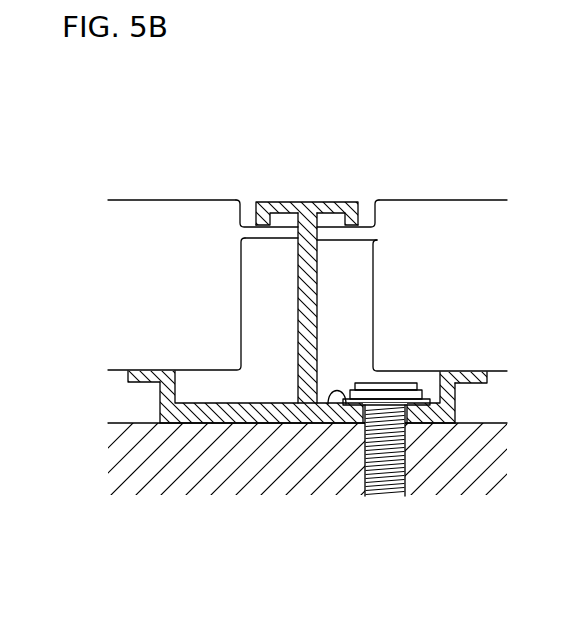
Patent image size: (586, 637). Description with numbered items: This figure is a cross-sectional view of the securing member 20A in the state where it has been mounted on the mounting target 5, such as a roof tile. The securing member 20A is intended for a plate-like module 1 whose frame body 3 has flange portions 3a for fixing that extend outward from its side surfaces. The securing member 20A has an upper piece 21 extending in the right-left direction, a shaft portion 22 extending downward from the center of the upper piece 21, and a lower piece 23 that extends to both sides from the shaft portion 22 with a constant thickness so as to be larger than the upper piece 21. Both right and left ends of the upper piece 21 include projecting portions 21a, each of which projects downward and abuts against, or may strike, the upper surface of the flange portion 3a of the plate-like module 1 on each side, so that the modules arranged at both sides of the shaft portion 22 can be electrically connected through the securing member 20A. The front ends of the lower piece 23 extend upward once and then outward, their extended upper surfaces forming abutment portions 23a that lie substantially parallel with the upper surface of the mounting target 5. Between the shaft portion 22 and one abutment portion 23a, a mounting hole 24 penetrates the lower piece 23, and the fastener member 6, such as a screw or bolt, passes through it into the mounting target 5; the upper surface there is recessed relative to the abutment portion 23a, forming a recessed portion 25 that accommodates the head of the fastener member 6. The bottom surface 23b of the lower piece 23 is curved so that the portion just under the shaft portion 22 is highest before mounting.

The plate-like module 1 is at (310, 153).
The frame body 3 is at (298, 254).
The flange portion 3a is at (277, 239).
The securing member 20A is at (352, 194).
The upper piece 21 is at (313, 255).
The projecting portion 21a is at (240, 228).
The shaft portion 22 is at (303, 302).
The lower piece 23 is at (298, 430).
The abutment portion 23a is at (142, 370).
The bottom surface 23b is at (272, 423).
The mounting hole 24 is at (398, 416).
The recessed portion 25 is at (345, 405).
The fastener member 6 is at (385, 398).
The mounting target 5 is at (485, 421).